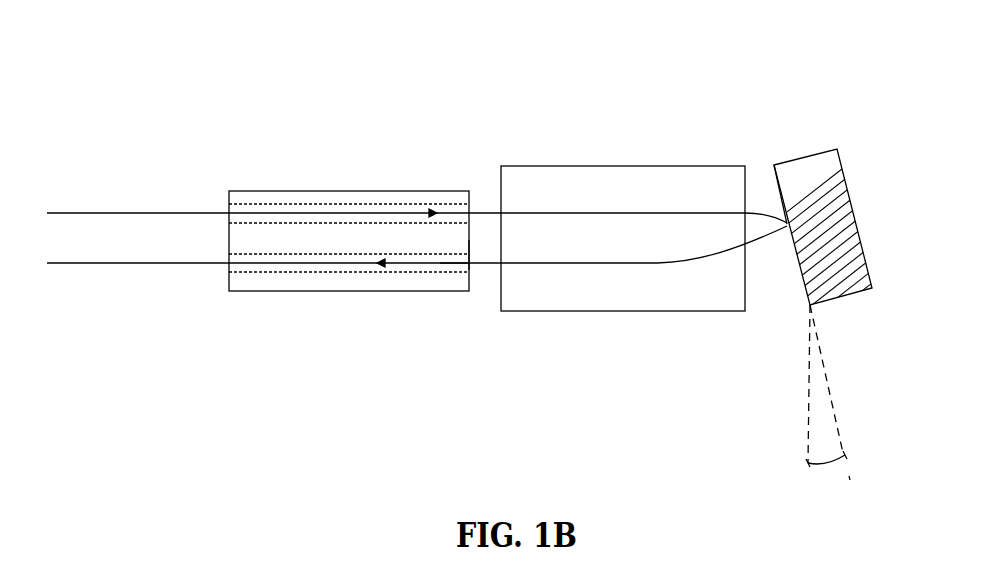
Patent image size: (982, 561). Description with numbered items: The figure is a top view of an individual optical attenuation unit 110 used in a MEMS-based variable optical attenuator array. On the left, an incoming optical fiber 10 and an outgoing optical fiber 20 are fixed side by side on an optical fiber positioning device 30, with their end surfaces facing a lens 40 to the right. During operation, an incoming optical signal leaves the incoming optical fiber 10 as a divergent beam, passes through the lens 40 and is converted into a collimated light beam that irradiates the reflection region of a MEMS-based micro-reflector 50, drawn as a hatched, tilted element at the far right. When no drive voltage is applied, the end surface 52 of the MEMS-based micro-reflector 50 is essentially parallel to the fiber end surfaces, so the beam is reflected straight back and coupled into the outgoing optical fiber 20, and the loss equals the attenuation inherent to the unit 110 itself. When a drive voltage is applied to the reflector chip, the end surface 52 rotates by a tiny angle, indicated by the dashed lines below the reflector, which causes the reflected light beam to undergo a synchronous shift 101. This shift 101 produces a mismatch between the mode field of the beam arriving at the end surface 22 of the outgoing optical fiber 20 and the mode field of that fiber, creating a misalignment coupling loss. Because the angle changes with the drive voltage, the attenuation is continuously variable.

The individual optical attenuation unit 110 is at (496, 40).
The incoming optical fiber 10 is at (243, 204).
The optical fiber positioning device 30 is at (379, 191).
The outgoing optical fiber 20 is at (282, 272).
The synchronous shift 101 is at (459, 270).
The end surface 22 is at (479, 261).
The lens 40 is at (656, 300).
The MEMS-based micro-reflector 50 is at (837, 149).
The end surface 52 is at (780, 192).